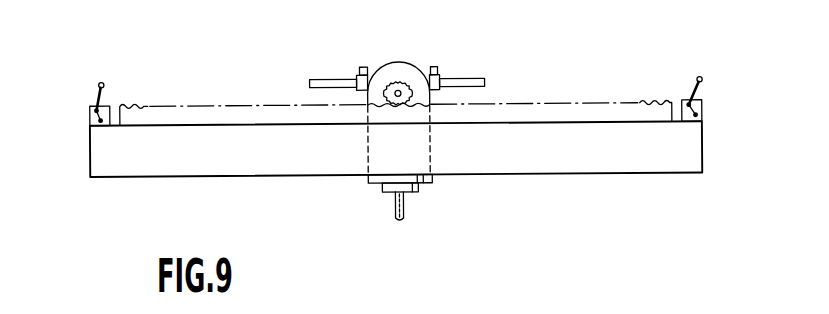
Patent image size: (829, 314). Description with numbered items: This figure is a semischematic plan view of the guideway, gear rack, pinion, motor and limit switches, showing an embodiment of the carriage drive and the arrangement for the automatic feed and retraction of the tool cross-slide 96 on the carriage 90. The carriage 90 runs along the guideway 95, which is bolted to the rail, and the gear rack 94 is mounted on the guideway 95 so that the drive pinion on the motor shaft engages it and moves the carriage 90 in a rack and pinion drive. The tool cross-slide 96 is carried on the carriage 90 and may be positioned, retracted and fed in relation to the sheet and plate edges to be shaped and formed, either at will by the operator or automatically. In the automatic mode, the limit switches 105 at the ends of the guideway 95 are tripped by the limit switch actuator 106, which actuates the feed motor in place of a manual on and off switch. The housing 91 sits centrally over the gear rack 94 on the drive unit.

The carriage 90 is at (431, 164).
The gear housing 91 is at (395, 62).
The gear rack 94 is at (513, 103).
The guideway 95 is at (522, 175).
The tool cross-slide 96 is at (388, 188).
The limit switches 105 is at (90, 106).
The limit switch actuator 106 is at (340, 84).